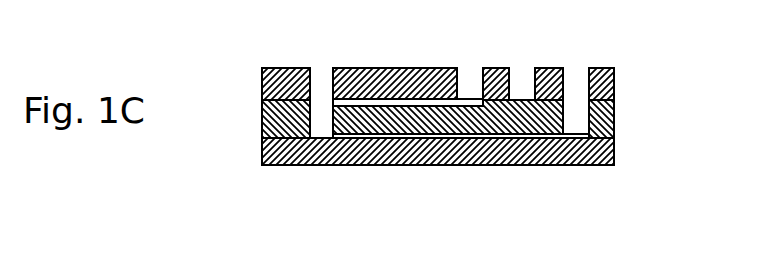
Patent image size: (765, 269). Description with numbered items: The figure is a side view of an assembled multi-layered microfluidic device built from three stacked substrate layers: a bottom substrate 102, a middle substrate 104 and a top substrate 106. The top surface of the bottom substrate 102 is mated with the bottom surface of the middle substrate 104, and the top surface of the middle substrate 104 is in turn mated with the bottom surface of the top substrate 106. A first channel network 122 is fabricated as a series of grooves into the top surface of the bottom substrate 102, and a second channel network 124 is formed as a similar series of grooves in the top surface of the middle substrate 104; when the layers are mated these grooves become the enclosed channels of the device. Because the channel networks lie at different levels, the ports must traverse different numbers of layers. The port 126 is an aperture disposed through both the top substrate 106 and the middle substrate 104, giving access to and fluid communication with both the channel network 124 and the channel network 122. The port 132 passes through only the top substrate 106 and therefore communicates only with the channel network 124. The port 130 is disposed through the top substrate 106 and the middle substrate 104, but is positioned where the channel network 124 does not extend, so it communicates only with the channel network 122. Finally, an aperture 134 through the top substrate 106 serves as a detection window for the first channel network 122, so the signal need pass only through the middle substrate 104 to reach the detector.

The bottom substrate 102 is at (615, 148).
The middle substrate 104 is at (615, 115).
The top substrate 106 is at (615, 85).
The first channel network 122 is at (422, 136).
The second channel network 124 is at (487, 106).
The port 126 is at (311, 60).
The port 130 is at (577, 62).
The port 132 is at (469, 62).
The aperture 134 is at (523, 62).